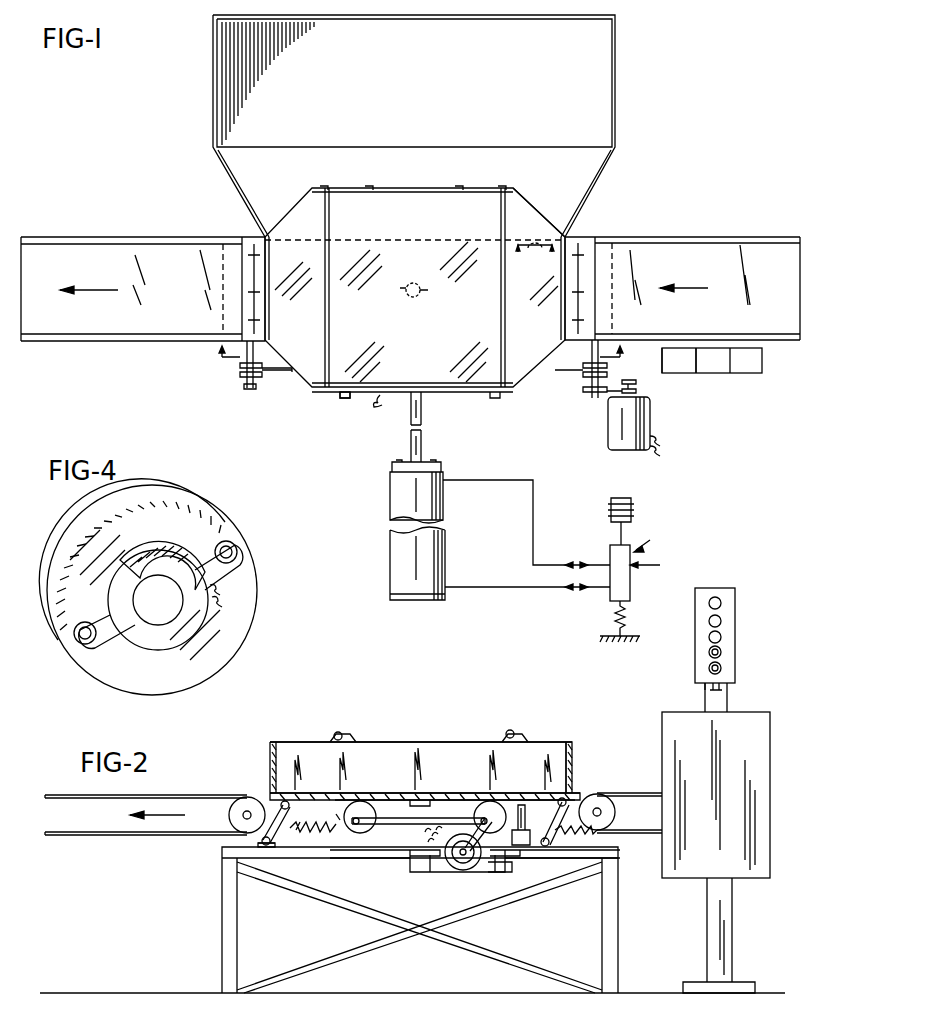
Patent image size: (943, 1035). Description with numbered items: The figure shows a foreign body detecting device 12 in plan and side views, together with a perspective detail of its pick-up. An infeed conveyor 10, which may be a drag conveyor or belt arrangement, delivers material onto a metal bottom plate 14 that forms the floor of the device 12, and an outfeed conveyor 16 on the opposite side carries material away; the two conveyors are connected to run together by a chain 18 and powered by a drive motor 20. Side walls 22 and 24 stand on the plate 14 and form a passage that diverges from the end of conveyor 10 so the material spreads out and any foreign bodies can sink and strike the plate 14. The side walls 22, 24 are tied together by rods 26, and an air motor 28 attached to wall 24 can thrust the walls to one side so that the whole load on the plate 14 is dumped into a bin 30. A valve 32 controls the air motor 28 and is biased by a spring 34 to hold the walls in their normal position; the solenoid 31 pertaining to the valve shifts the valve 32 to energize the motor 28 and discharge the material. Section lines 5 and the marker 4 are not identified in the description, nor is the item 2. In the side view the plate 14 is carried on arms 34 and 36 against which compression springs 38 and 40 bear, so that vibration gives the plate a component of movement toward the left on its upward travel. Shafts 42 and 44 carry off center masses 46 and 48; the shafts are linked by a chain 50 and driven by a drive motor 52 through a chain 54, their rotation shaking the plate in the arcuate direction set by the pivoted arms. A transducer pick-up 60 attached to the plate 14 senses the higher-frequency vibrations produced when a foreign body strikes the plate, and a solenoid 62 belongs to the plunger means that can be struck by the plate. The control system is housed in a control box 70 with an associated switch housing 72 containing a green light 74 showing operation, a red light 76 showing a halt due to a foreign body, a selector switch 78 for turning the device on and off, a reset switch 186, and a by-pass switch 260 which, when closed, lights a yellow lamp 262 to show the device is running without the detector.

In FIG. 1, the bin 30 is at (617, 86).
In FIG. 1, the side wall 22 is at (365, 187).
In FIG. 2, the side wall 22 is at (282, 740).
In FIG. 1, the device 12 is at (604, 200).
In FIG. 2, the device 12 is at (577, 740).
In FIG. 1, the conveyor 10 is at (684, 253).
In FIG. 2, the conveyor 10 is at (620, 793).
In FIG. 1, the section line 5 is at (535, 260).
In FIG. 1, the shaft center 4 is at (430, 296).
In FIG. 1, the rods 26 is at (332, 310).
In FIG. 2, the rods 26 is at (340, 732).
In FIG. 1, the conveyor 16 is at (155, 325).
In FIG. 2, the conveyor 16 is at (133, 835).
In FIG. 1, the bolt assembly 2 is at (425, 369).
In FIG. 1, the chain 18 is at (275, 380).
In FIG. 1, the side wall 24 is at (357, 396).
In FIG. 2, the side wall 24 is at (562, 740).
In FIG. 1, the metal bottom plate 14 is at (470, 392).
In FIG. 4, the metal bottom plate 14 is at (258, 592).
In FIG. 2, the metal bottom plate 14 is at (370, 790).
In FIG. 1, the drive motor 20 is at (652, 422).
In FIG. 1, the control box 70 is at (755, 373).
In FIG. 2, the control box 70 is at (770, 790).
In FIG. 1, the switch housing 72 is at (720, 376).
In FIG. 2, the switch housing 72 is at (721, 621).
In FIG. 1, the yellow lamp 262 is at (705, 373).
In FIG. 2, the yellow lamp 262 is at (721, 603).
In FIG. 1, the air motor 28 is at (400, 560).
In FIG. 1, the solenoid 31 is at (630, 514).
In FIG. 1, the valve 32 is at (630, 590).
In FIG. 1, the spring 34 is at (625, 620).
In FIG. 2, the spring 34 is at (292, 835).
In FIG. 4, the transducer pick-up 60 is at (210, 636).
In FIG. 2, the transducer pick-up 60 is at (420, 796).
In FIG. 2, the shaft 42 is at (365, 805).
In FIG. 2, the off center mass 46 is at (380, 812).
In FIG. 2, the shaft 44 is at (478, 805).
In FIG. 2, the off center mass 48 is at (500, 800).
In FIG. 2, the solenoid 62 is at (527, 832).
In FIG. 2, the compression spring 38 is at (299, 824).
In FIG. 2, the chain 50 is at (390, 828).
In FIG. 2, the drive motor 52 is at (458, 862).
In FIG. 2, the chain 54 is at (490, 862).
In FIG. 2, the arm 36 is at (556, 848).
In FIG. 2, the compression spring 40 is at (614, 855).
In FIG. 2, the reset switch 186 is at (705, 694).
In FIG. 2, the green light 74 is at (721, 637).
In FIG. 2, the red light 76 is at (721, 652).
In FIG. 2, the selector switch 78 is at (721, 668).
In FIG. 2, the switch 260 is at (721, 670).